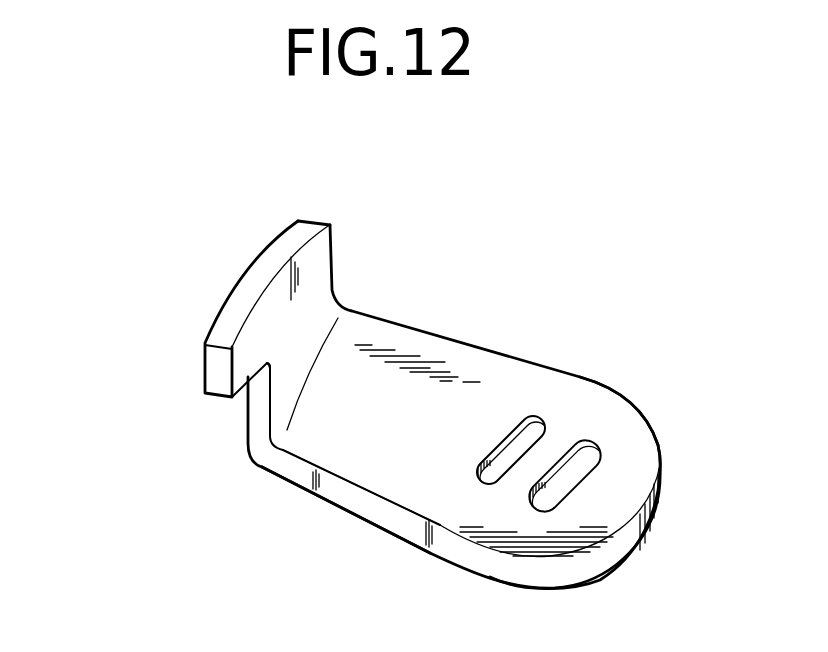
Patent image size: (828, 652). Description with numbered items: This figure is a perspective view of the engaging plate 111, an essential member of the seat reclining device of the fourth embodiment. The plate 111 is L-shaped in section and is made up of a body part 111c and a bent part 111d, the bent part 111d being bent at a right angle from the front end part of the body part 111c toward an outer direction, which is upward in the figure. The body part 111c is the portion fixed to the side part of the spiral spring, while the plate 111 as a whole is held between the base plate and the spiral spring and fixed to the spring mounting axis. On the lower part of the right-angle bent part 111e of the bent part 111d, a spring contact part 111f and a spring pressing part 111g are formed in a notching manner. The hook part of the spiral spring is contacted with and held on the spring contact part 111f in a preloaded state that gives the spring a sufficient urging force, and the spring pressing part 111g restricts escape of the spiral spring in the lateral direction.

The plate 111 is at (505, 312).
The body part 111c is at (585, 398).
The bent part 111d is at (317, 272).
The part bent at a right angle 111e is at (203, 372).
The spring contact part 111f is at (262, 420).
The spring pressing part 111g is at (242, 397).